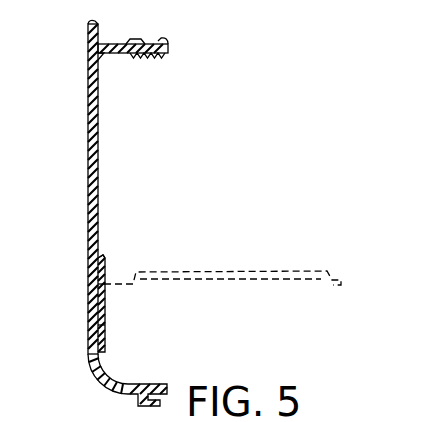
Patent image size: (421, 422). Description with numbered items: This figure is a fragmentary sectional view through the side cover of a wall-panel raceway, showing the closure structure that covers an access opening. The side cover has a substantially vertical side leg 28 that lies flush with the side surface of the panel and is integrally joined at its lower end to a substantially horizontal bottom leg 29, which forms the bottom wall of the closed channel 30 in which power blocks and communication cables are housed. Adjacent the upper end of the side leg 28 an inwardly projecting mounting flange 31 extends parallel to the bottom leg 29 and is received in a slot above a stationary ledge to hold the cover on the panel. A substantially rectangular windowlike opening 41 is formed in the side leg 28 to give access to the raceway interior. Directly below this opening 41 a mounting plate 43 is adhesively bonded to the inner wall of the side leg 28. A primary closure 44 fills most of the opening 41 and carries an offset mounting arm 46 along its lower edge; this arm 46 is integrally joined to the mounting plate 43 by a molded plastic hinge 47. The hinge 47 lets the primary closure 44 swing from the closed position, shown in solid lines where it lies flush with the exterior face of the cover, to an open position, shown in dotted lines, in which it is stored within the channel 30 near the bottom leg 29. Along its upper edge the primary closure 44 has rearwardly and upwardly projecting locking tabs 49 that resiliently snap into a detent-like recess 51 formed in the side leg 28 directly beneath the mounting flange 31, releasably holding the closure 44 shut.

The side leg 28 is at (90, 347).
The bottom leg 29 is at (131, 385).
The channel 30 is at (252, 172).
The mounting flange 31 is at (165, 42).
The windowlike opening 41 is at (89, 258).
The mounting plate 43 is at (105, 326).
The primary closure 44 is at (99, 157).
The offset mounting arm 46 is at (105, 257).
The molded plastic hinge 47 is at (105, 282).
The locking tabs 49 is at (100, 63).
The detent-like recess 51 is at (97, 44).